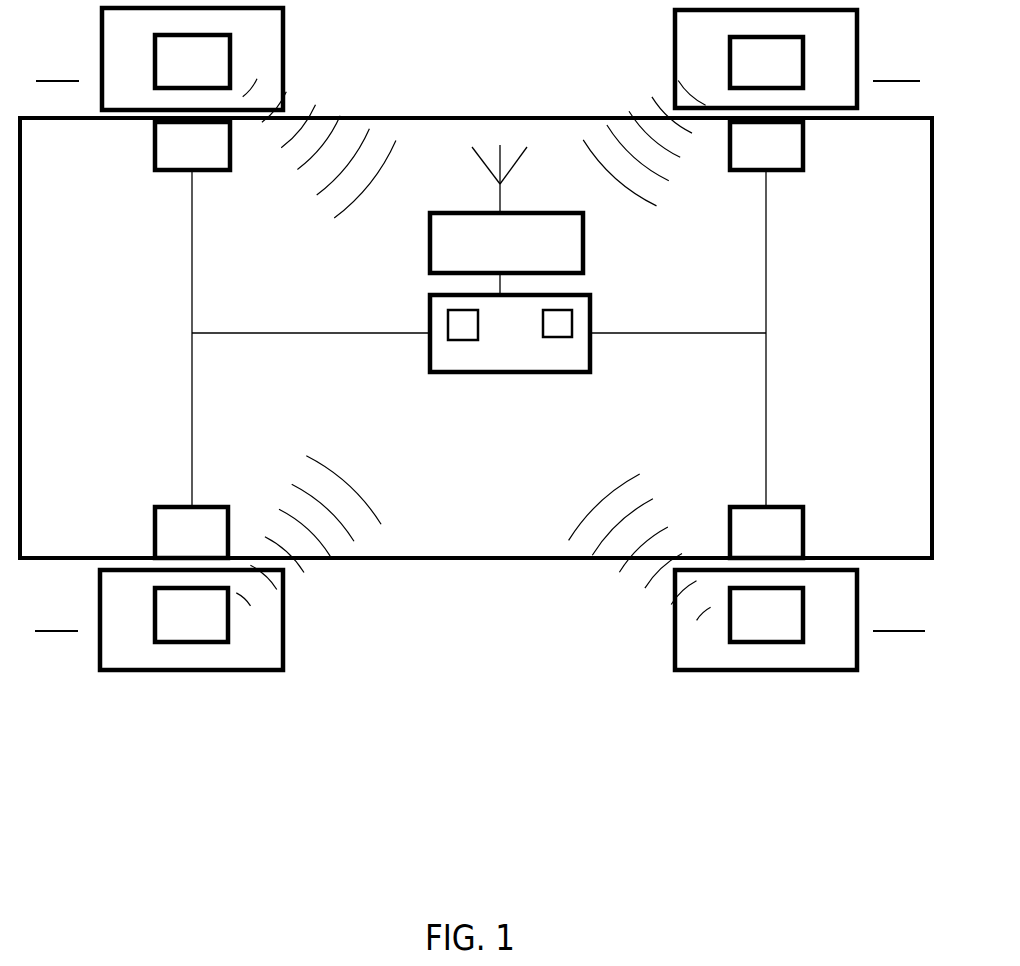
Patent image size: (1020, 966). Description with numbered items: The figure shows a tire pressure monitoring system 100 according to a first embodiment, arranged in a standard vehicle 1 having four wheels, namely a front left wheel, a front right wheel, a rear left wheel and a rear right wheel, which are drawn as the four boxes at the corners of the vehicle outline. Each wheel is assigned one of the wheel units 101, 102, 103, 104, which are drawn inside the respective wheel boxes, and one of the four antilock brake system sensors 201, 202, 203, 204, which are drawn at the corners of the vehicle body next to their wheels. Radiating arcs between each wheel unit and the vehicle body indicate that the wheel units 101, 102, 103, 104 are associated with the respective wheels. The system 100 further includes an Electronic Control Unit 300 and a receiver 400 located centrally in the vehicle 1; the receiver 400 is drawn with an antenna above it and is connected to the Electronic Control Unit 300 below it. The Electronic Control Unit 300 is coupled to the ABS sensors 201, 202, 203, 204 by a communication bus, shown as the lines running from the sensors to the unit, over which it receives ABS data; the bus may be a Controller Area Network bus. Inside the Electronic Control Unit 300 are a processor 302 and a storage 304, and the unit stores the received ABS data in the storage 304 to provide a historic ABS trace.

The vehicle 1 is at (908, 327).
The tire pressure monitoring system 100 is at (507, 52).
The wheel unit 101 is at (192, 61).
The wheel unit 102 is at (766, 62).
The wheel unit 103 is at (766, 615).
The wheel unit 104 is at (191, 615).
The antilock brake system sensor 201 is at (192, 314).
The antilock brake system sensor 202 is at (766, 314).
The antilock brake system sensor 203 is at (766, 532).
The antilock brake system sensor 204 is at (191, 532).
The Electronic Control Unit 300 is at (519, 380).
The processor 302 is at (450, 339).
The storage 304 is at (587, 333).
The receiver 400 is at (506, 220).